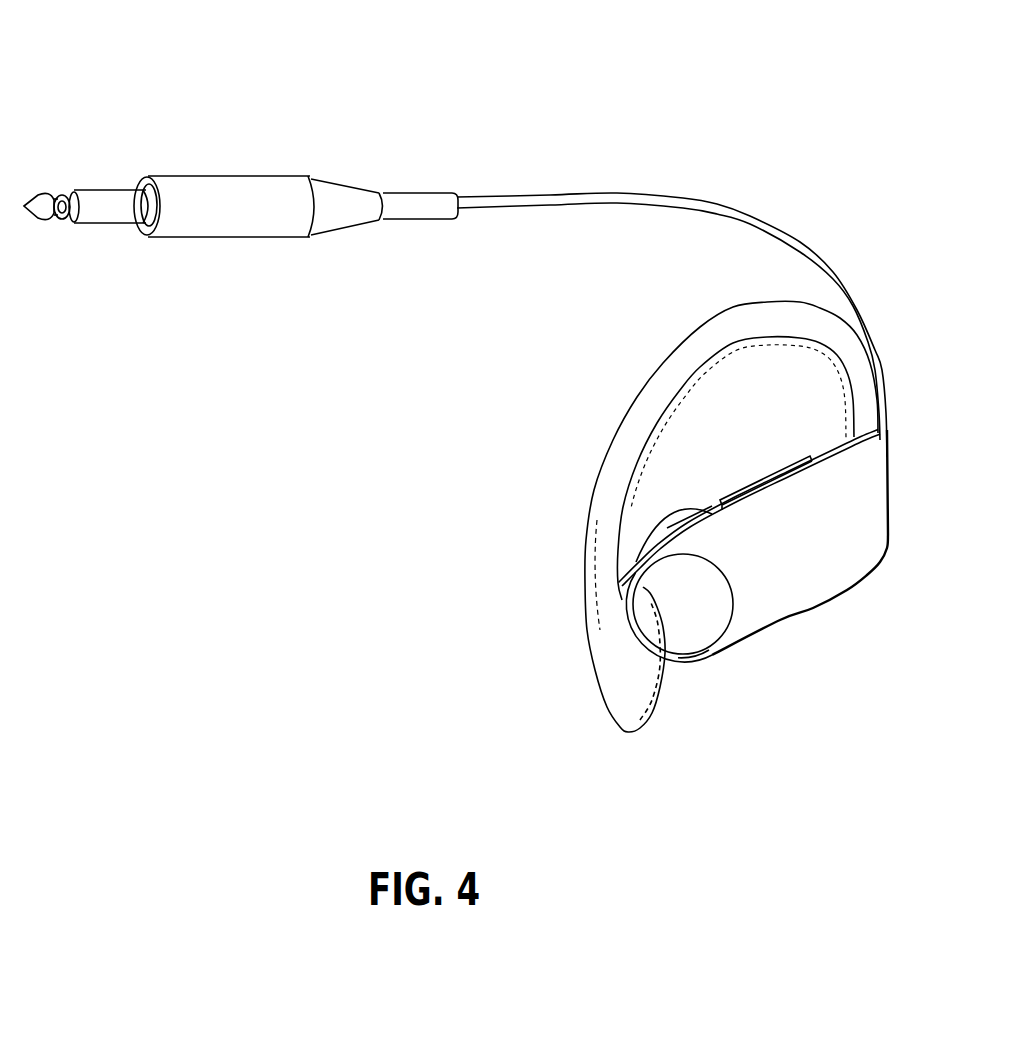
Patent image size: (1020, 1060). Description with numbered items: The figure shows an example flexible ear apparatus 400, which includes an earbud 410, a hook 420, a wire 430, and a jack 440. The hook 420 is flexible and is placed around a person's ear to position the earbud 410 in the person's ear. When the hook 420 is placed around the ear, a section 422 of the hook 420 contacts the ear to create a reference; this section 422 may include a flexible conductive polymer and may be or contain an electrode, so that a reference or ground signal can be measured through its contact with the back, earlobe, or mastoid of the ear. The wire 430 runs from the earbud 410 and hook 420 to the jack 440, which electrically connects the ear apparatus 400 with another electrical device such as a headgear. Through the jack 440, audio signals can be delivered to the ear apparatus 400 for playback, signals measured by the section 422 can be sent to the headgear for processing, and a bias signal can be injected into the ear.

The flexible ear apparatus 400 is at (459, 385).
The jack 440 is at (135, 160).
The wire 430 is at (707, 179).
The hook 420 is at (542, 551).
The section 422 is at (636, 421).
The earbud 410 is at (734, 681).